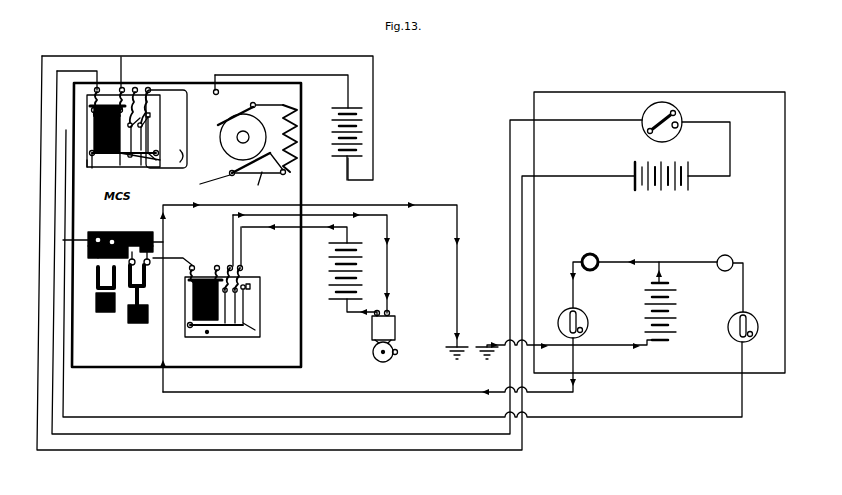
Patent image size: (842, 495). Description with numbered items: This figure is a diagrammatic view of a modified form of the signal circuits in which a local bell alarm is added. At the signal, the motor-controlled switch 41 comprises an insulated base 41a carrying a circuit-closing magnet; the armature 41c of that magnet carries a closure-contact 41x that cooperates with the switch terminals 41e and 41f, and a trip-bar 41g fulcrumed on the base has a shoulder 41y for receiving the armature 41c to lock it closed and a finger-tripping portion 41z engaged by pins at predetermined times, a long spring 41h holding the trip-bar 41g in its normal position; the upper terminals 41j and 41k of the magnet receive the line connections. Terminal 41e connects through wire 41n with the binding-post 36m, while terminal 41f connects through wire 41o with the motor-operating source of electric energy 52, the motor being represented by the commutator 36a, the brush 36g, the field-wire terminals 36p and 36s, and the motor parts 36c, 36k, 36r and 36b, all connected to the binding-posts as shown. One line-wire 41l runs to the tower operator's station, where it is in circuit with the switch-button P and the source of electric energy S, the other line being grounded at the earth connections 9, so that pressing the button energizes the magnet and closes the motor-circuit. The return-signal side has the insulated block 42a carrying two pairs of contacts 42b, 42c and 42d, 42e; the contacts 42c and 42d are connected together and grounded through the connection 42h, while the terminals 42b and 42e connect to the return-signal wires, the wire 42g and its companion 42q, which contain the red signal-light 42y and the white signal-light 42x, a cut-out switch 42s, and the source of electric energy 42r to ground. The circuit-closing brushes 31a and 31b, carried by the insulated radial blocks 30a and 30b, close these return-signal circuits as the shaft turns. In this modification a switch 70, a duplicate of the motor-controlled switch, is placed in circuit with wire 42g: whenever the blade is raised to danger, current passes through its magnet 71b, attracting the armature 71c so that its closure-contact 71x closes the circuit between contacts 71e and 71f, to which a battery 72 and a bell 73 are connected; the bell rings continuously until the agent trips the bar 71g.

The motor-controlled switch MCS 41 is at (97, 122).
The relay terminal 41j is at (99, 87).
The relay terminal 41k is at (124, 87).
The switch terminal 41e is at (148, 110).
The long spring 41h is at (146, 122).
The switch terminal 41f is at (132, 130).
The trip-bar 41g is at (150, 147).
The shoulder 41y is at (157, 160).
The wire 41n is at (184, 160).
The armature 41c is at (108, 160).
The closure-contact 41x is at (128, 158).
The finger-tripping portion 41z is at (146, 160).
The insulated base 41a is at (95, 162).
The line-wire 41l is at (63, 285).
The wire 41o is at (248, 60).
The contact wheel 36c is at (240, 138).
The terminal 36k is at (233, 117).
The field-wire terminal 36p is at (267, 96).
The contact arm 36r is at (246, 115).
The resistance 36b is at (298, 118).
The binding-post 36m is at (255, 166).
The motor-commutator 36a is at (217, 179).
The brush 36g is at (266, 169).
The field-wire terminal 36s is at (267, 186).
The motor-operating source of electric energy 52 is at (340, 138).
The ground connection 42h is at (412, 206).
The return-signal wire 42g is at (345, 391).
The conductor 42q is at (200, 232).
The insulated block 42a is at (133, 232).
The contact 42b is at (90, 240).
The contact 42c is at (100, 256).
The contact 42d is at (160, 240).
The contact 42e is at (170, 258).
The circuit-closing brush 31b is at (100, 282).
The insulated radial block 30b is at (106, 312).
The circuit-closing brush 31a is at (140, 292).
The insulated radial block 30a is at (136, 325).
The switch 70 is at (232, 307).
The magnet 71b is at (192, 310).
The armature 71c is at (207, 332).
The closure-contact 71x is at (226, 330).
The contact 71f is at (236, 305).
The contact 71e is at (250, 312).
The trip-bar 71g is at (250, 340).
The battery 72 is at (342, 279).
The bell 73 is at (385, 337).
The ground 9 is at (546, 354).
The switch-button P is at (678, 116).
The source of electric energy S is at (673, 168).
The red signal-light 42y is at (598, 244).
The white signal-light 42x is at (733, 244).
The source of electric energy 42r is at (668, 312).
The cut-out switch 42s is at (733, 334).